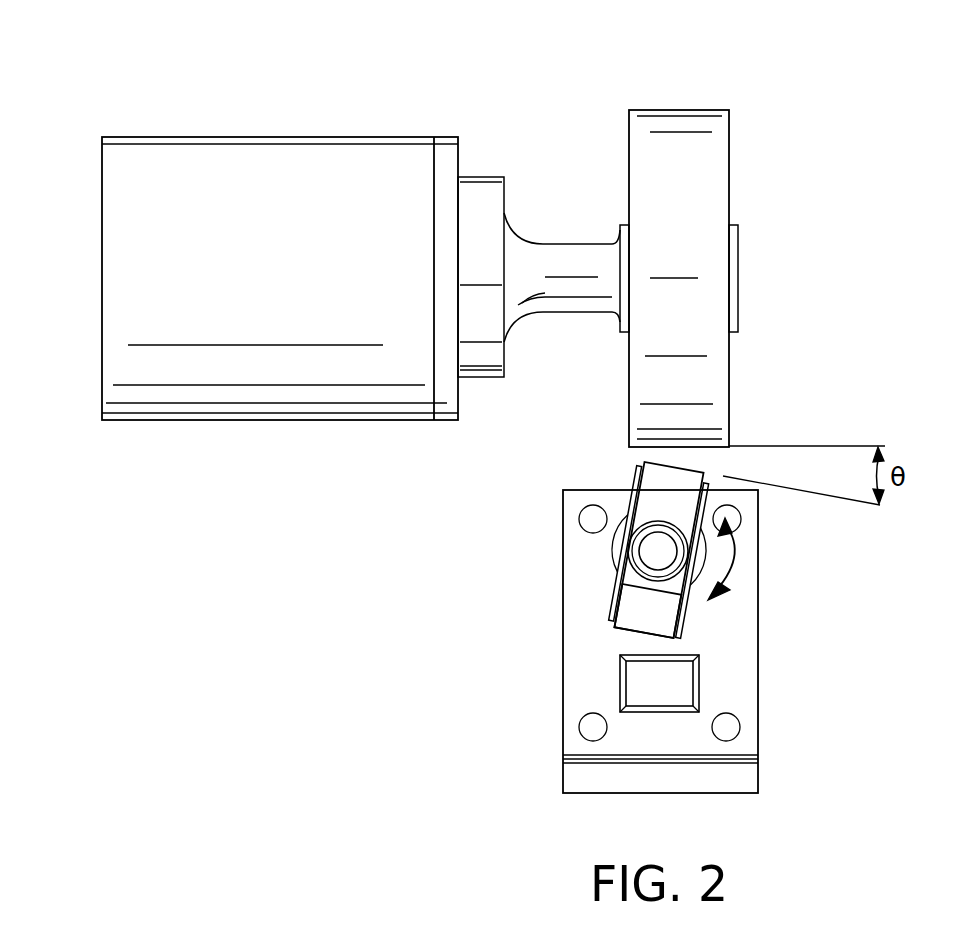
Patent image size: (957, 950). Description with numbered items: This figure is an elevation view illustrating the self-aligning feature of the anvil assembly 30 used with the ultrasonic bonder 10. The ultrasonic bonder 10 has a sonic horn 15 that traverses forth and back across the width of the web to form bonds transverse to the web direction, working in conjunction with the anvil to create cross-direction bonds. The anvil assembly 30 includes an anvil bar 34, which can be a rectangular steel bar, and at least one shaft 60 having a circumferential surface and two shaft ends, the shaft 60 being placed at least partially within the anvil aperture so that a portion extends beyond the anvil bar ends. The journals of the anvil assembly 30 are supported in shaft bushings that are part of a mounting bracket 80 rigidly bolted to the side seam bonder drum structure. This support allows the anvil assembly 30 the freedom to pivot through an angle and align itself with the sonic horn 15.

The ultrasonic bonder 10 is at (362, 67).
The sonic horn 15 is at (730, 178).
The anvil assembly 30 is at (657, 483).
The anvil bar 34 is at (638, 612).
The shaft 60 is at (657, 553).
The mounting bracket 80 is at (758, 622).